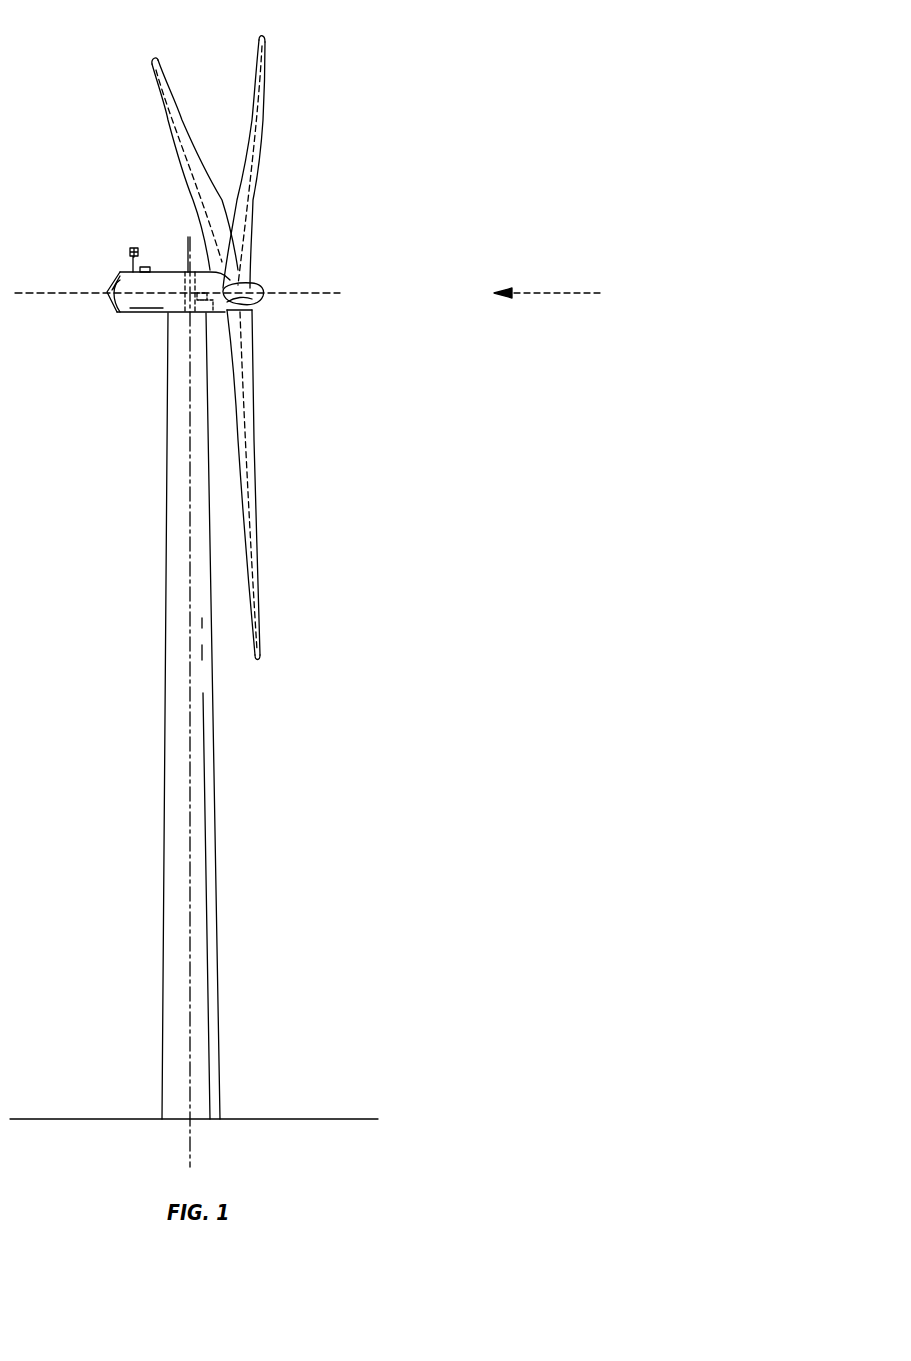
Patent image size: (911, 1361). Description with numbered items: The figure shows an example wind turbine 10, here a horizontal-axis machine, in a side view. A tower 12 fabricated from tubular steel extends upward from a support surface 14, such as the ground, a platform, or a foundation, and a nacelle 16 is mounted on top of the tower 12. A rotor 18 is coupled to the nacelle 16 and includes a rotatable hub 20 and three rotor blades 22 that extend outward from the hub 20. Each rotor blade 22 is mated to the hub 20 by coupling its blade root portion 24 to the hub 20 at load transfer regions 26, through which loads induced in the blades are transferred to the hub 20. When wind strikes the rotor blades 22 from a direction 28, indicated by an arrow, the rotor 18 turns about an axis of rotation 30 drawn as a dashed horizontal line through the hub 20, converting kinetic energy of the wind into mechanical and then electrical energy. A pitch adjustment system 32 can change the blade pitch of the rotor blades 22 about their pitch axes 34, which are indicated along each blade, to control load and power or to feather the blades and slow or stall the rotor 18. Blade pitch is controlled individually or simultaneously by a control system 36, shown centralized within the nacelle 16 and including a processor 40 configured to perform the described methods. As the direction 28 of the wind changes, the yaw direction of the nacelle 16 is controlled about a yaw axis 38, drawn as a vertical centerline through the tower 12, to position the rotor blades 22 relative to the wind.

The wind turbine 10 is at (406, 129).
The tower 12 is at (165, 832).
The support surface 14 is at (92, 1119).
The nacelle 16 is at (145, 313).
The rotor 18 is at (265, 193).
The rotatable hub 20 is at (263, 287).
The rotor blade 22 is at (192, 180).
The blade root portion 24 is at (253, 405).
The load transfer regions 26 is at (248, 320).
The direction 28 is at (567, 291).
The axis of rotation 30 is at (330, 297).
The pitch adjustment system 32 is at (227, 315).
The pitch axes 34 is at (154, 72).
The control system 36 is at (190, 305).
The yaw axis 38 is at (190, 754).
The processor 40 is at (197, 300).